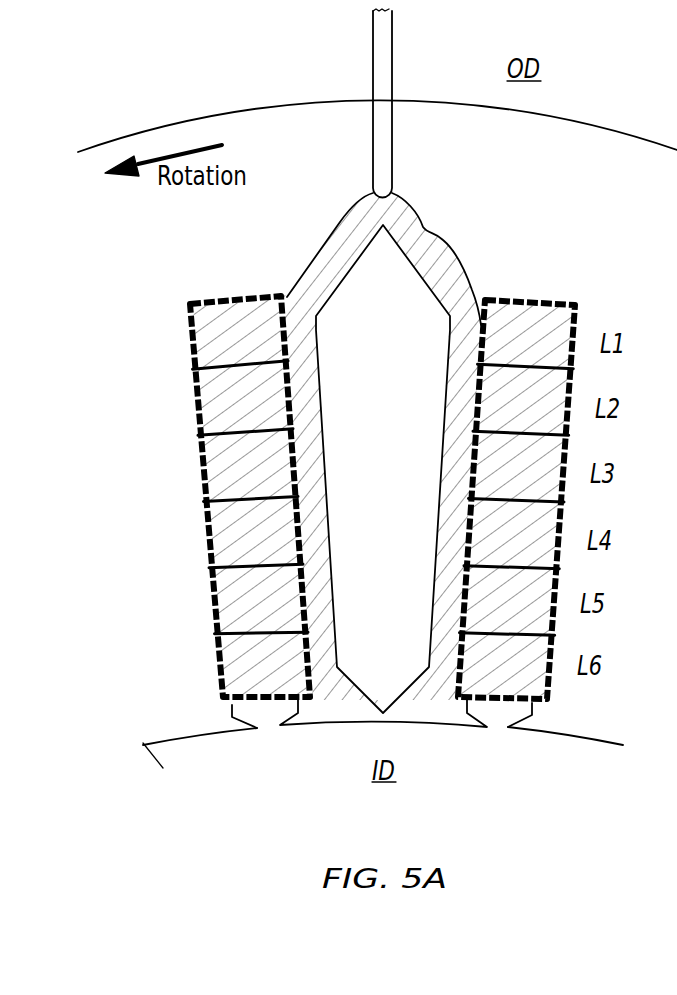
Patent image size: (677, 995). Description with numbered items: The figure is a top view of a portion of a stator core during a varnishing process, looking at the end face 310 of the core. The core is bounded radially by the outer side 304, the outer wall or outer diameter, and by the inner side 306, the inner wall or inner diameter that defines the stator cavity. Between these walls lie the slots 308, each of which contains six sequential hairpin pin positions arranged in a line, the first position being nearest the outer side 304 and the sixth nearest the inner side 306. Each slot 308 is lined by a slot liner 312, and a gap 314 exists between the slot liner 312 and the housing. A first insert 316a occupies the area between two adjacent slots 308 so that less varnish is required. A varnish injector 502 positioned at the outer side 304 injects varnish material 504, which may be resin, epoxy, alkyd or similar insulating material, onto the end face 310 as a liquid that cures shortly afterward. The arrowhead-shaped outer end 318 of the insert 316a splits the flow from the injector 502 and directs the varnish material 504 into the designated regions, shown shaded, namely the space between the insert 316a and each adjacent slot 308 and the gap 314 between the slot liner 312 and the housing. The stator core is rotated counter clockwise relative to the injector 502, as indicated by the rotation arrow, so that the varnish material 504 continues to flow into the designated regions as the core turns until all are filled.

The outer side 304 is at (192, 117).
The inner side 306 is at (173, 757).
The slot 308 is at (267, 720).
The end face 310 is at (576, 176).
The slot liner 312 is at (570, 297).
The gap 314 is at (263, 293).
The first insert 316a is at (411, 475).
The arrowhead-shaped outer end 318 is at (390, 235).
The varnish injector 502 is at (373, 57).
The varnish material 504 is at (348, 223).